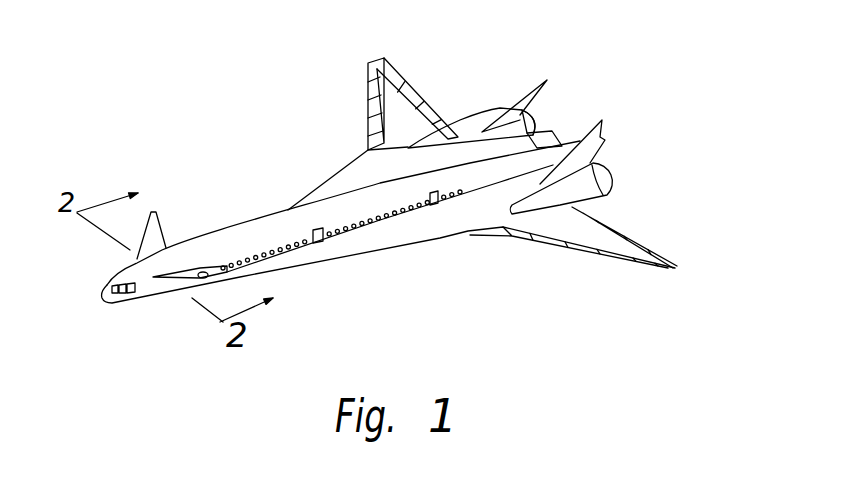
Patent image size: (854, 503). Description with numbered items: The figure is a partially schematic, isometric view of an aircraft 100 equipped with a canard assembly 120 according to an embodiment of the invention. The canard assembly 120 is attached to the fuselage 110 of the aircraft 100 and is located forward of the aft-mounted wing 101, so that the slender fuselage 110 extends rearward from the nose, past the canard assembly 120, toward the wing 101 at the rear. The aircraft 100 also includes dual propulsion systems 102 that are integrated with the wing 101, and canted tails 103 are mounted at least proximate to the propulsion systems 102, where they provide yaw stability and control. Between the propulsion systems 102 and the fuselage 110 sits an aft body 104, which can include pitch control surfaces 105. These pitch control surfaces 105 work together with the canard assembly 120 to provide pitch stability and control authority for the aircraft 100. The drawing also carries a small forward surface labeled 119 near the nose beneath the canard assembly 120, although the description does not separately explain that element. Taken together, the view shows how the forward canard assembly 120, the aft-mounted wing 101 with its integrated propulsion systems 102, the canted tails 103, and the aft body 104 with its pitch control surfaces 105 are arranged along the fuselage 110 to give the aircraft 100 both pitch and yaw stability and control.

The aircraft 100 is at (349, 268).
The wing 101 is at (484, 238).
The propulsion systems 102 is at (476, 100).
The canted tails 103 is at (548, 81).
The aft body 104 is at (576, 112).
The pitch control surfaces 105 is at (574, 129).
The fuselage 110 is at (223, 228).
The canard 119 is at (190, 279).
The canard assembly 120 is at (168, 205).